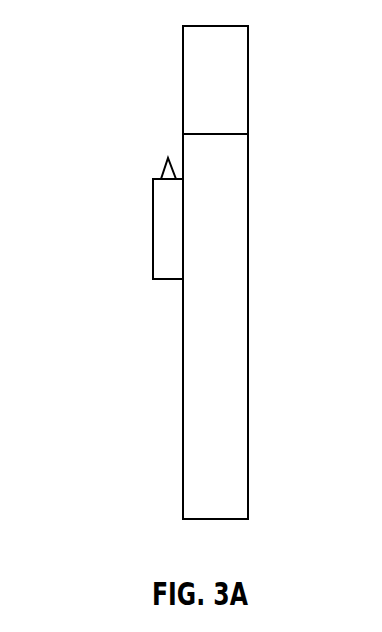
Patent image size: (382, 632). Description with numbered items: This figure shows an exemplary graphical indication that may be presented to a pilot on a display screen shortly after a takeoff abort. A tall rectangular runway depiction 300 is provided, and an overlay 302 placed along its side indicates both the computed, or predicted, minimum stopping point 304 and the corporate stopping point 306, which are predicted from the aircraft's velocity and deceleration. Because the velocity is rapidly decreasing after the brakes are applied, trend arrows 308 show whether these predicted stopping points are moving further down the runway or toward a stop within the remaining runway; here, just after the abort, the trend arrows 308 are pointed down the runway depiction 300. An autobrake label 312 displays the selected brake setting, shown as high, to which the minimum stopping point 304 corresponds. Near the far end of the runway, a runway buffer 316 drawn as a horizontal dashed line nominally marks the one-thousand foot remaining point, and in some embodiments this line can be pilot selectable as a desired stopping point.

The runway depiction 300 is at (248, 428).
The overlay 302 is at (277, 198).
The minimum stopping point 304 is at (175, 281).
The corporate stopping point 306 is at (166, 177).
The trend arrows 308 is at (113, 123).
The autobrake label 312 is at (120, 277).
The runway buffer 316 is at (248, 93).